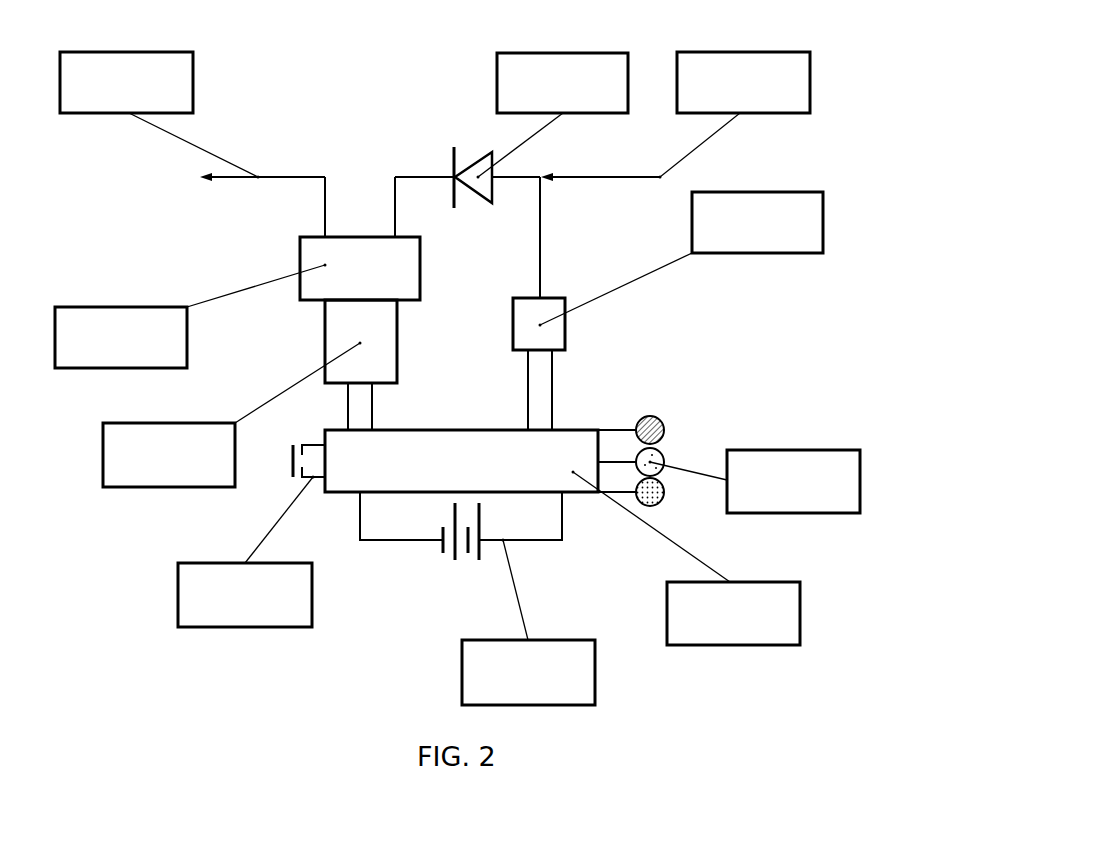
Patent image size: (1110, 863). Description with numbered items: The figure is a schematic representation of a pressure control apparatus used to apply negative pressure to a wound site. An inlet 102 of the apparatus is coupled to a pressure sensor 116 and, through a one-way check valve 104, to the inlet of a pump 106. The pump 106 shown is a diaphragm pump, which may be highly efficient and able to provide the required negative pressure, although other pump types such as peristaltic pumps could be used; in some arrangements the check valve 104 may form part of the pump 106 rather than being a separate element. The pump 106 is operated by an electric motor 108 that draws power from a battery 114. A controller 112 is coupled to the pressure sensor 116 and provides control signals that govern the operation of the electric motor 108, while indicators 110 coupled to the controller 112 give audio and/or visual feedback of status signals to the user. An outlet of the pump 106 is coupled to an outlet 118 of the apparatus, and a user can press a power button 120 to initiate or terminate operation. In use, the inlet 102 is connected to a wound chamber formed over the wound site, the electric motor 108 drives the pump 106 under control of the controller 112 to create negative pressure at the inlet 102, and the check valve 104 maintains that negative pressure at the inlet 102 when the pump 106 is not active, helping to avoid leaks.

The inlet 102 is at (748, 52).
The one-way check valve 104 is at (497, 82).
The pump 106 is at (118, 306).
The electric motor 108 is at (172, 487).
The indicators 110 is at (793, 450).
The controller 112 is at (800, 616).
The battery 114 is at (462, 673).
The pressure sensor 116 is at (760, 254).
The outlet 118 is at (193, 84).
The power button 120 is at (178, 594).